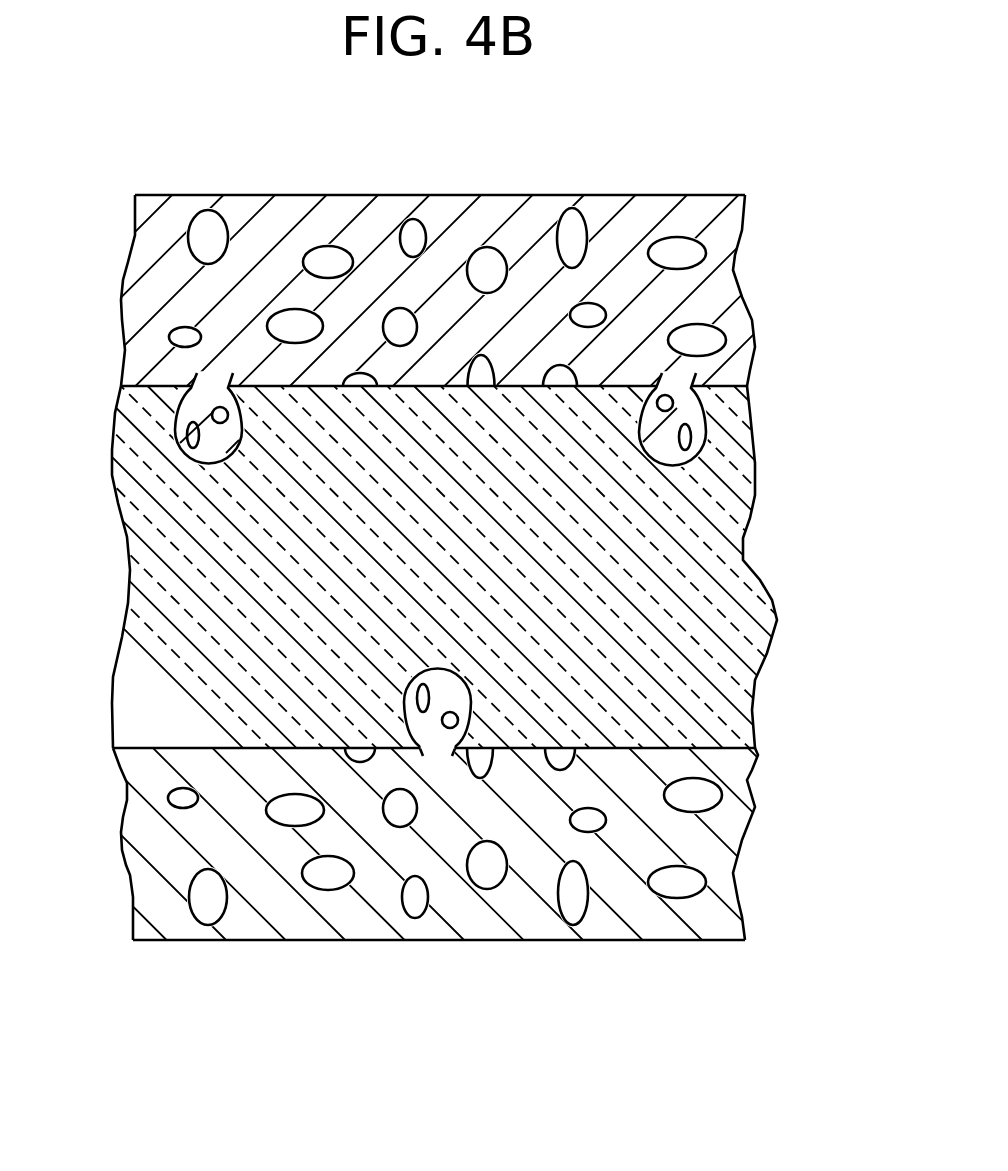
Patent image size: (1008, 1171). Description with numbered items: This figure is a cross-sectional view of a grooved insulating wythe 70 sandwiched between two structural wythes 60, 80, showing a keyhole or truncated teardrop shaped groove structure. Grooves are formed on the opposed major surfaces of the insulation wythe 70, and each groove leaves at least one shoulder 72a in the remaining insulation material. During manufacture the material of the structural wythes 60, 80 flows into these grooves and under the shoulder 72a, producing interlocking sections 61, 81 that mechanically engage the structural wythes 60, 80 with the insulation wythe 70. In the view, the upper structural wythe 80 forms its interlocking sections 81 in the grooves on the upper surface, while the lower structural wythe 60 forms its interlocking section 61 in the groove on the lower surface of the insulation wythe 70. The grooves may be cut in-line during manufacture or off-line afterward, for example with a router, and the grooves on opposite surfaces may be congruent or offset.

The structural wythe 80 is at (504, 210).
The interlocking section 81 is at (188, 415).
The insulating wythe 70 is at (740, 594).
The shoulder 72a is at (420, 738).
The interlocking section 61 is at (432, 722).
The structural wythe 60 is at (466, 916).